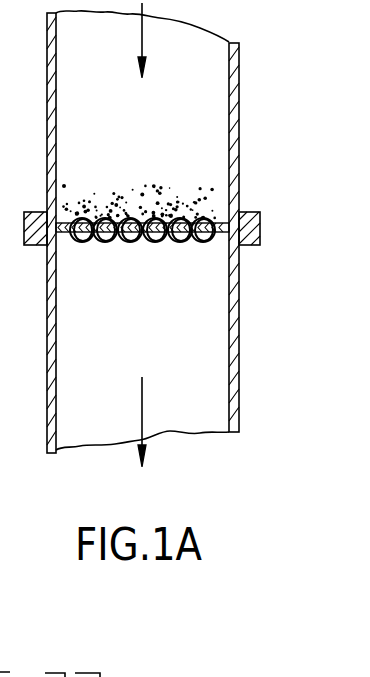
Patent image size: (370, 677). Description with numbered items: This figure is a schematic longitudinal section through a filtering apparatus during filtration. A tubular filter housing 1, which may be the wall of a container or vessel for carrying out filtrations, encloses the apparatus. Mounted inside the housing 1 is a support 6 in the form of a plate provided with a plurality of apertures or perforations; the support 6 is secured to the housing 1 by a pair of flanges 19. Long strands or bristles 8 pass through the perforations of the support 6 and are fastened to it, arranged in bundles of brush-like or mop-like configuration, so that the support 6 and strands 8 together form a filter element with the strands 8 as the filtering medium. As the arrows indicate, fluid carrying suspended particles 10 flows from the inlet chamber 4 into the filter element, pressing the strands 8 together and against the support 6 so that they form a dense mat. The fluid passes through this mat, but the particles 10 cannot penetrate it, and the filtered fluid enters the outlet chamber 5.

The tubular filter housing 1 is at (238, 112).
The inlet chamber 4 is at (75, 86).
The outlet chamber 5 is at (73, 384).
The support 6 is at (77, 238).
The strands 8 is at (207, 200).
The particles 10 is at (82, 207).
The flanges 19 is at (258, 213).